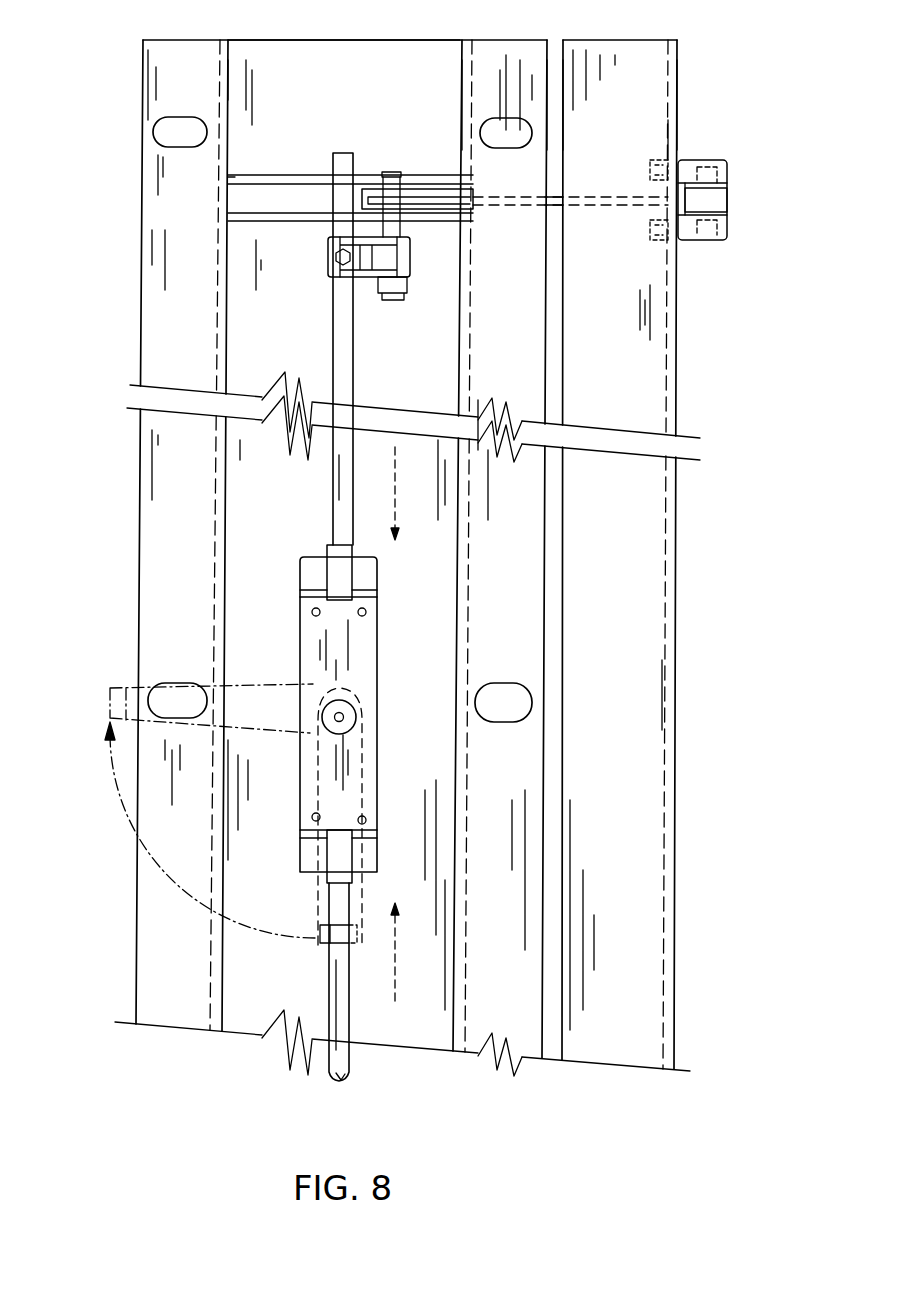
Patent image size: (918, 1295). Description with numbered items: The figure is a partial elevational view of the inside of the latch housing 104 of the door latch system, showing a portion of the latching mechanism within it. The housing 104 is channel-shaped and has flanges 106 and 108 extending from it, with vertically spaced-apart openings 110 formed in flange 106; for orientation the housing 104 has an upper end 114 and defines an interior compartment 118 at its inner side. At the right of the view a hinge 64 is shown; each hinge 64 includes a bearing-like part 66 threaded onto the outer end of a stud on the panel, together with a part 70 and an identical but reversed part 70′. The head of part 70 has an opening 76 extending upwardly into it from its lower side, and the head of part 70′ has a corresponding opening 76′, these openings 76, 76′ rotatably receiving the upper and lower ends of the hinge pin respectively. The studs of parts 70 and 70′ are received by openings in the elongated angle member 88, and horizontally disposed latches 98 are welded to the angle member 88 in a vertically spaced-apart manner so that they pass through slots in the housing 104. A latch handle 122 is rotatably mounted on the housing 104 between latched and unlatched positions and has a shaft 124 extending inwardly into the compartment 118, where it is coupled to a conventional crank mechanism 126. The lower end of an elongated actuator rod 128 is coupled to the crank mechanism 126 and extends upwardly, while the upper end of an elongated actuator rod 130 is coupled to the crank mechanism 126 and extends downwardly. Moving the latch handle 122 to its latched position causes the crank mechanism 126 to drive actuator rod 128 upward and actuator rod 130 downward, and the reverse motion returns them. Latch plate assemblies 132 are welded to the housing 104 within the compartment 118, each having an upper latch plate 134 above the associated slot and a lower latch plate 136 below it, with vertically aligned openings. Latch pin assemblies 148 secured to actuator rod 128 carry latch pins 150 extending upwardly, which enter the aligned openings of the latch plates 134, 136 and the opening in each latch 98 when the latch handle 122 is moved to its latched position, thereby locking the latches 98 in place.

The hinge 64 is at (745, 163).
The bearing-like part 66 is at (728, 200).
The part 70 is at (699, 162).
The part 70′ is at (706, 243).
The upper fastener hole 76 is at (716, 175).
The opening 76′ is at (725, 238).
The angle member 88 is at (646, 134).
The latch 98 is at (421, 200).
The latch housing 104 is at (432, 28).
The flange 106 is at (172, 40).
The flange 108 is at (497, 62).
The opening 110 is at (170, 138).
The upper end 114 is at (318, 34).
The interior compartment 118 is at (338, 97).
The latch handle 122 is at (108, 702).
The shaft 124 is at (343, 716).
The crank mechanism 126 is at (357, 644).
The actuator rod 128 is at (340, 346).
The actuator rod 130 is at (342, 1055).
The latch plate assembly 132 is at (270, 165).
The upper latch plate 134 is at (297, 180).
The lower latch plate 136 is at (283, 224).
The latch pin assembly 148 is at (346, 267).
The latch pin 150 is at (395, 230).